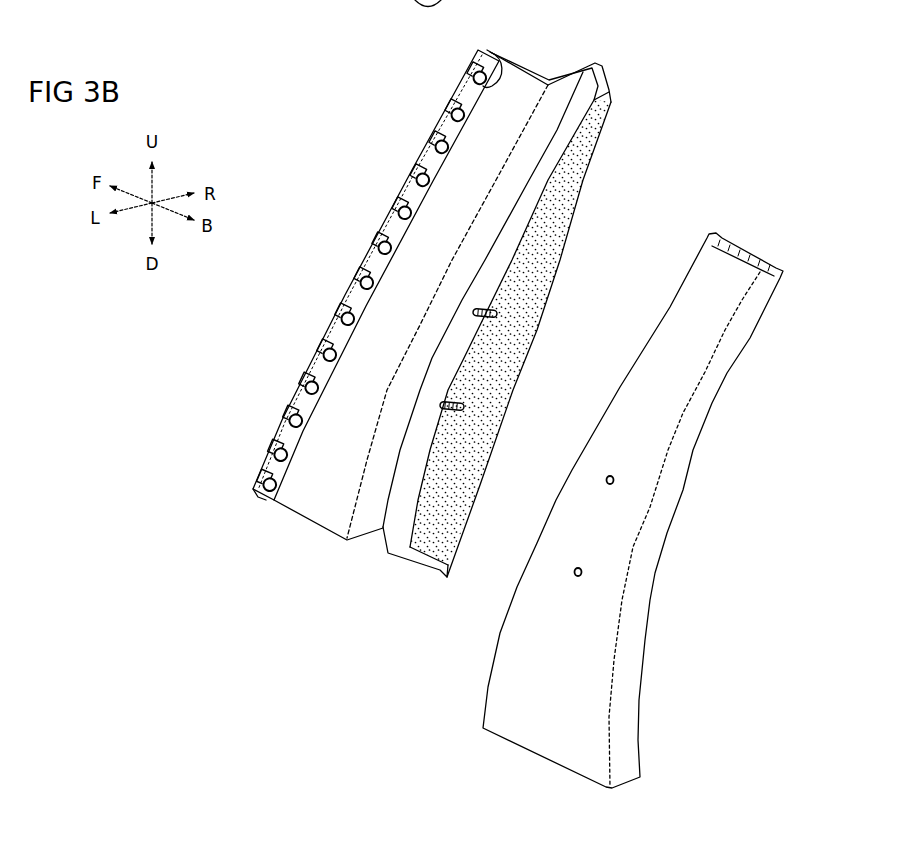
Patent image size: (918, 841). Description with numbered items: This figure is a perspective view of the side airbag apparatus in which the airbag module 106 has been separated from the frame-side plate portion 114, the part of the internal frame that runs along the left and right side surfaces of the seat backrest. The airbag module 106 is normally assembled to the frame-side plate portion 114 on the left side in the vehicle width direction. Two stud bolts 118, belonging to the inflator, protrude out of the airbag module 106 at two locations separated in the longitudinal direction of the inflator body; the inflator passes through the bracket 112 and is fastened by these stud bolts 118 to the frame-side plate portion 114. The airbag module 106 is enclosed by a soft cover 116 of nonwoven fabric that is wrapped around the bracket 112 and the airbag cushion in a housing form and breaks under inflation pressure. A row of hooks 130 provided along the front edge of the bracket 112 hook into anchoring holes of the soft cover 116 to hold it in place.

The airbag module 106 is at (405, 170).
The bracket 112 is at (510, 81).
The frame-side plate portion 114 is at (698, 363).
The soft cover 116 is at (436, 122).
The stud bolt 118 is at (490, 314).
The hook 130 is at (497, 54).